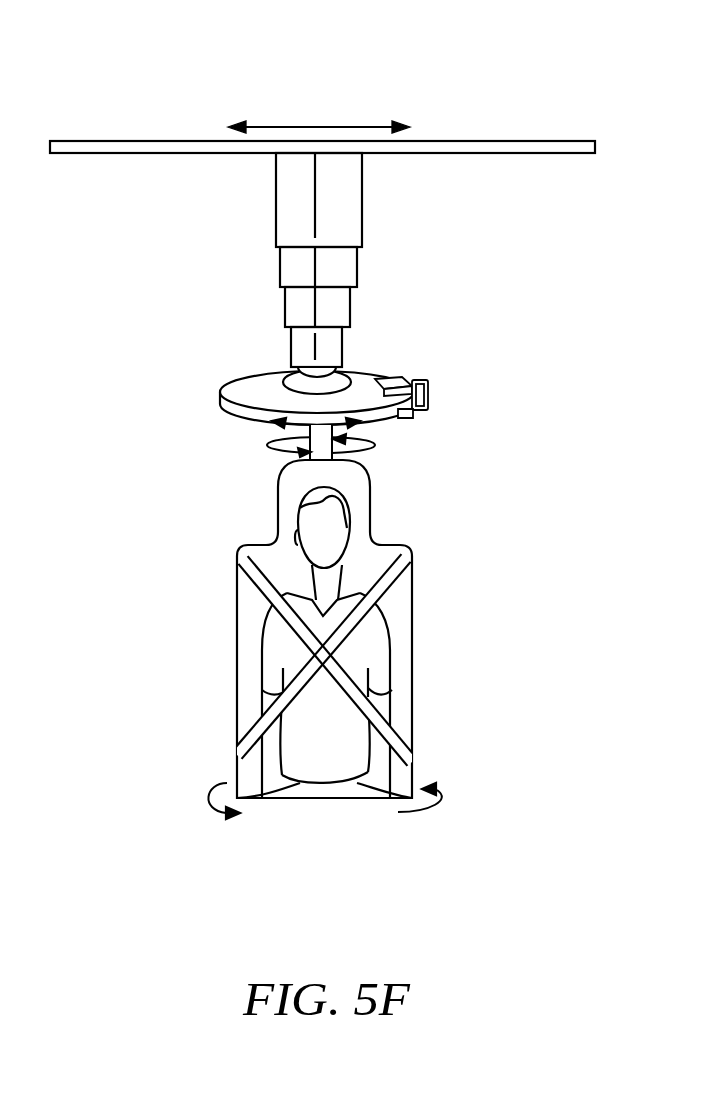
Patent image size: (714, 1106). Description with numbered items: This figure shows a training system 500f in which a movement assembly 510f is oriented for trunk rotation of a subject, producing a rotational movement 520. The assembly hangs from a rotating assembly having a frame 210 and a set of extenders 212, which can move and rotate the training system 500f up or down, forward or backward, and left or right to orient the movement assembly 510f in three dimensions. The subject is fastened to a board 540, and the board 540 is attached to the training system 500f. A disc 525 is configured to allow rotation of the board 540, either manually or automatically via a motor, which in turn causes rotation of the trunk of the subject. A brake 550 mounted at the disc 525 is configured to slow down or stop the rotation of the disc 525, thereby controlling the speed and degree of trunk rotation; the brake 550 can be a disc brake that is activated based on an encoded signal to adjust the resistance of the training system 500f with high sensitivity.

The training system 500f is at (408, 71).
The frame 210 is at (175, 141).
The extenders 212 is at (362, 196).
The movement assembly 510f is at (192, 358).
The disc 525 is at (382, 425).
The brake 550 is at (428, 389).
The movement 520 is at (376, 446).
The board 540 is at (408, 612).